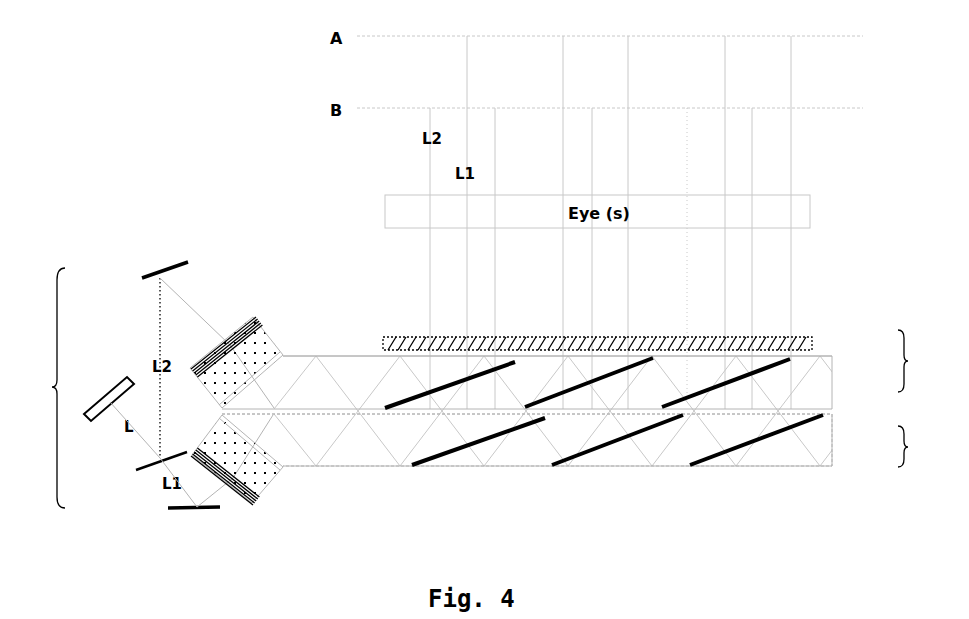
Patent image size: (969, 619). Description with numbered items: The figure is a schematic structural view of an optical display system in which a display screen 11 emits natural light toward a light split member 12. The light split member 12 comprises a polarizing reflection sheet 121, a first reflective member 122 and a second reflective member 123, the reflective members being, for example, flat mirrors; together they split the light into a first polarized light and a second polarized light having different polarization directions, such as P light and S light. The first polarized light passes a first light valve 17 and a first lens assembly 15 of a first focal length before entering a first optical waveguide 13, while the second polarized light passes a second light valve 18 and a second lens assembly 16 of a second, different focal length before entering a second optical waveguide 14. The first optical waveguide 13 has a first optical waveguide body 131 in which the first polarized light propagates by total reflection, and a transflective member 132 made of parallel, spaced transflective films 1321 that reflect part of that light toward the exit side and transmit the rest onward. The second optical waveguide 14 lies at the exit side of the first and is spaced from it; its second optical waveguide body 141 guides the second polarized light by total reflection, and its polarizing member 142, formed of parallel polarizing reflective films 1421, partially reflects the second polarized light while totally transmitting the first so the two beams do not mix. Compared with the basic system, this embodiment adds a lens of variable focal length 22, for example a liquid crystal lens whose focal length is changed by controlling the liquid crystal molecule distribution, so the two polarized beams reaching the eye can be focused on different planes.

The display screen 11 is at (98, 390).
The light split member 12 is at (41, 388).
The polarizing reflection sheet 121 is at (141, 464).
The first reflective member 122 is at (164, 507).
The second reflective member 123 is at (143, 277).
The first optical waveguide 13 is at (578, 440).
The first optical waveguide body 131 is at (822, 432).
The transflective member 132 is at (822, 457).
The transflective film 1321 is at (600, 448).
The second optical waveguide 14 is at (604, 398).
The second optical waveguide body 141 is at (822, 398).
The polarizing member 142 is at (812, 341).
The polarizing reflective film 1421 is at (400, 400).
The first lens assembly 15 is at (263, 470).
The second lens assembly 16 is at (263, 335).
The first light valve 17 is at (238, 500).
The second light valve 18 is at (232, 333).
The lens of variable focal length 22 is at (765, 337).